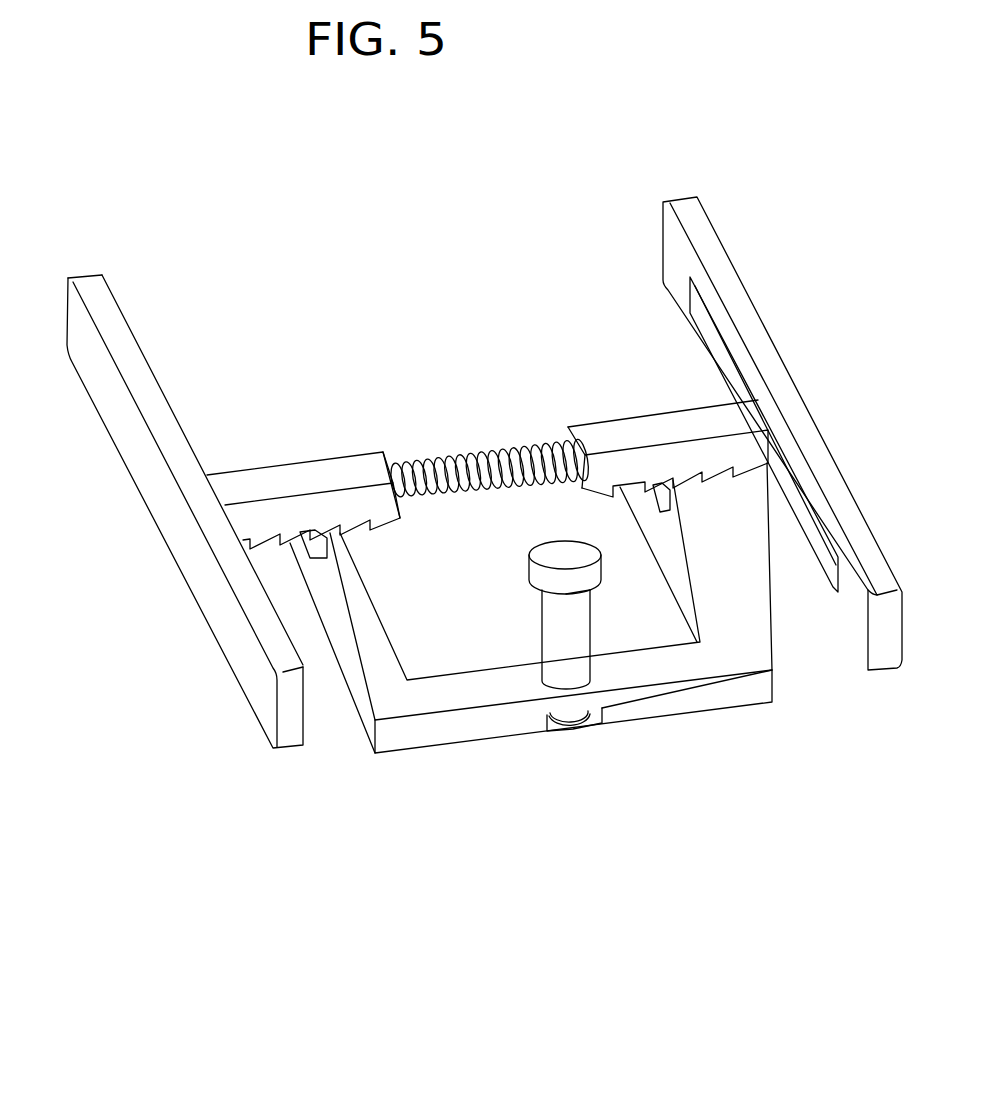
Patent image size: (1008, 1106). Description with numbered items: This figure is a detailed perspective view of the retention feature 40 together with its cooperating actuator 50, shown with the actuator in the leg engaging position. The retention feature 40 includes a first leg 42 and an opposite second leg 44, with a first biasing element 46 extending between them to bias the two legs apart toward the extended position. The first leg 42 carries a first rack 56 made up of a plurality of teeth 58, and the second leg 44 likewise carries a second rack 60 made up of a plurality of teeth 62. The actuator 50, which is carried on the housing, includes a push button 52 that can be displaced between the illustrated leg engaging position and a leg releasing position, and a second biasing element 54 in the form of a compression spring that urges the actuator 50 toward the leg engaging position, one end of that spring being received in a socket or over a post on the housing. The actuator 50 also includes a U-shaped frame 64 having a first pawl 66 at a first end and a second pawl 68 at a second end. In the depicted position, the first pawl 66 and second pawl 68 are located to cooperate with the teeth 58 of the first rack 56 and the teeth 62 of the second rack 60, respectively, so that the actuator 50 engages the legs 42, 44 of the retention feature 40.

The retention feature 40 is at (608, 207).
The first leg 42 is at (130, 447).
The second leg 44 is at (760, 332).
The first biasing element 46 is at (470, 452).
The actuator 50 is at (465, 772).
The push button 52 is at (552, 553).
The second biasing element 54 is at (570, 730).
The first rack 56 is at (341, 502).
The teeth 58 is at (355, 535).
The second rack 60 is at (683, 467).
The teeth 62 is at (725, 483).
The U-shaped frame 64 is at (725, 695).
The first pawl 66 is at (330, 540).
The second pawl 68 is at (667, 512).